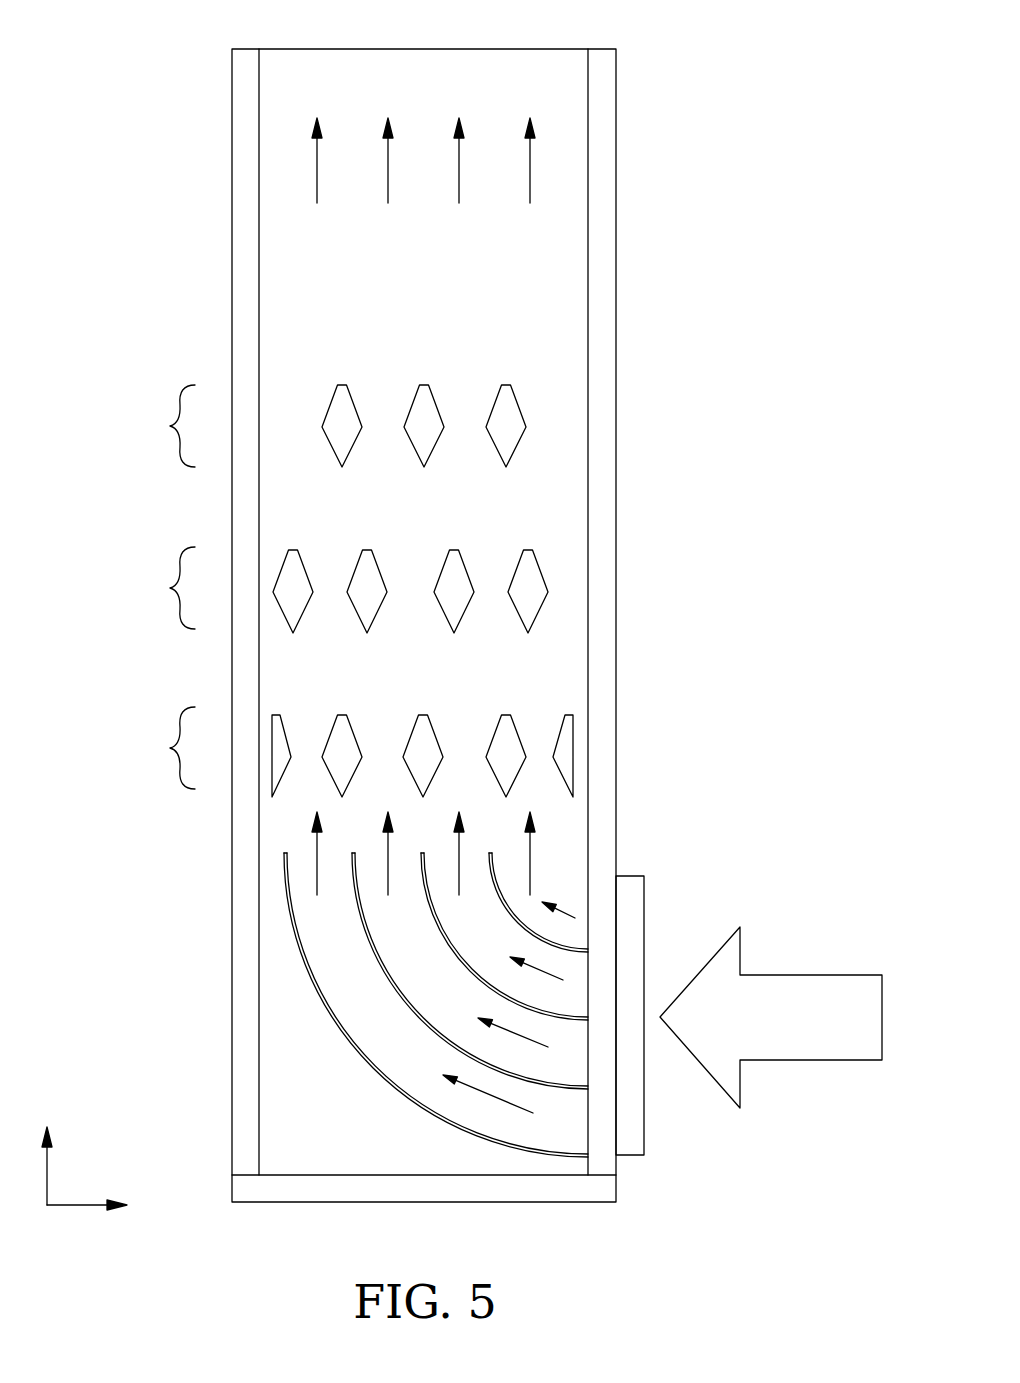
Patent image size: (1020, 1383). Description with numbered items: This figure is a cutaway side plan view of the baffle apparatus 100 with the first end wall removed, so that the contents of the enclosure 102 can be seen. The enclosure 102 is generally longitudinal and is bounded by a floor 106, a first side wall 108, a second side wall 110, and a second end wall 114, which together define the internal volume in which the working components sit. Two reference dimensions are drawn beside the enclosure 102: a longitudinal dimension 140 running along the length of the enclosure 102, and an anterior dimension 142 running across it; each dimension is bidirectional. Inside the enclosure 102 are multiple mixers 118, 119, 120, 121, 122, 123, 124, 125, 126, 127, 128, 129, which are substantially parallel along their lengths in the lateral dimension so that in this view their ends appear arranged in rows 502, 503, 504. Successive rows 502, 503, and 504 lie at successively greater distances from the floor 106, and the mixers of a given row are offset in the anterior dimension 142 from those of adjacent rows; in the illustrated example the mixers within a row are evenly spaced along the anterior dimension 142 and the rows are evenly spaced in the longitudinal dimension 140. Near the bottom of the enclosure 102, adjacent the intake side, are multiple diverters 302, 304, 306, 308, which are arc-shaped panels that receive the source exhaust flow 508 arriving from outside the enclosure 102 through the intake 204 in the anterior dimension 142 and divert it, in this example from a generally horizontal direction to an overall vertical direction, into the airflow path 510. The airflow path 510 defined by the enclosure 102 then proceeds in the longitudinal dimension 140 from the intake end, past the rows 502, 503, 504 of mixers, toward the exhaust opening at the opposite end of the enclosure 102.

The baffle apparatus 100 is at (100, 44).
The enclosure 102 is at (218, 42).
The floor 106 is at (281, 1190).
The first side wall 108 is at (606, 241).
The second side wall 110 is at (240, 251).
The second end wall 114 is at (557, 393).
The mixer 118 is at (342, 385).
The mixer 119 is at (424, 385).
The mixer 120 is at (506, 385).
The mixer 121 is at (293, 550).
The mixer 122 is at (367, 550).
The mixer 123 is at (454, 550).
The mixer 124 is at (528, 550).
The mixer 125 is at (278, 715).
The mixer 126 is at (342, 715).
The mixer 127 is at (423, 715).
The mixer 128 is at (506, 715).
The mixer 129 is at (569, 715).
The longitudinal dimension 140 is at (48, 1162).
The anterior dimension 142 is at (82, 1208).
The inlet 204 is at (648, 880).
The diverter 302 is at (507, 905).
The diverter 304 is at (473, 973).
The diverter 306 is at (442, 1037).
The diverter 308 is at (410, 1098).
The row 502 is at (162, 748).
The row 503 is at (162, 588).
The row 504 is at (162, 426).
The source exhaust flow 508 is at (812, 1061).
The airflow path 510 is at (560, 172).